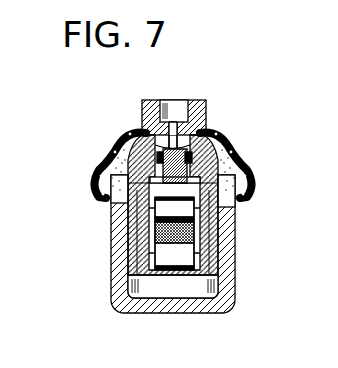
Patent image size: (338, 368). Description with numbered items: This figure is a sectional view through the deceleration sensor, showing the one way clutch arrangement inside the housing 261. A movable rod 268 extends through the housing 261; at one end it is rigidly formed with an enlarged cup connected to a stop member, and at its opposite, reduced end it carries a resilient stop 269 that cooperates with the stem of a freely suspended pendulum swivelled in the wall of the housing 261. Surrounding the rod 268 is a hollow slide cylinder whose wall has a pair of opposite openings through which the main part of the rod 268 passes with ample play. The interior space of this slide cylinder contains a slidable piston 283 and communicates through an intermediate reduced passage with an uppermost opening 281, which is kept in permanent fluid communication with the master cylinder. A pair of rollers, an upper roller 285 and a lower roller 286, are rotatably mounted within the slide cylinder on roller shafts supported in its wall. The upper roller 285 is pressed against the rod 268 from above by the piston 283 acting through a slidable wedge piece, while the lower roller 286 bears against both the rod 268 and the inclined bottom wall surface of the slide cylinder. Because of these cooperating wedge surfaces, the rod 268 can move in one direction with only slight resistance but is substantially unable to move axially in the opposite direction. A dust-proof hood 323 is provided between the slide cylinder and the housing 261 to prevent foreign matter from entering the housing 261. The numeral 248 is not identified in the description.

The resilient stop 269 is at (114, 128).
The housing 261 is at (153, 302).
The cartridge insert 248 is at (146, 202).
The uppermost opening 281 is at (185, 113).
The slidable piston 283 is at (180, 150).
The movable rod 268 is at (186, 232).
The upper roller 285 is at (163, 210).
The lower roller 286 is at (163, 248).
The dust-proof hood 323 is at (250, 180).